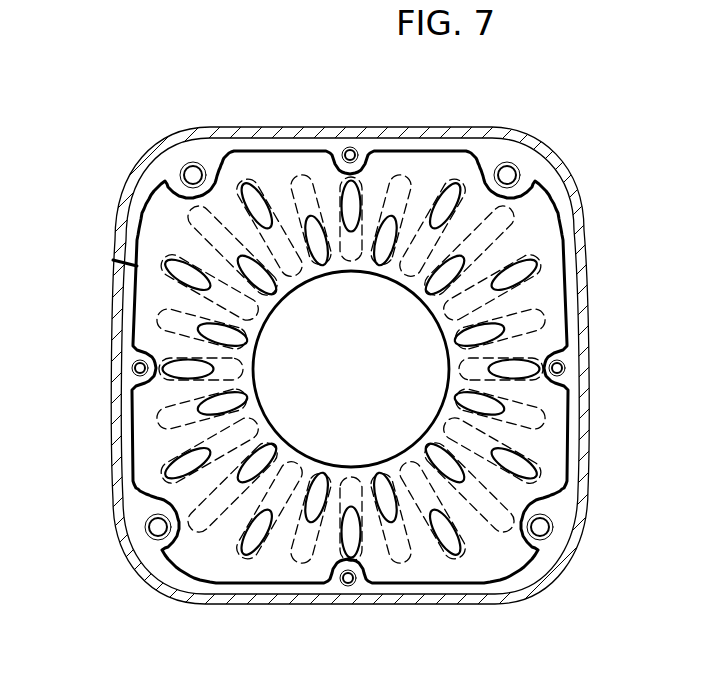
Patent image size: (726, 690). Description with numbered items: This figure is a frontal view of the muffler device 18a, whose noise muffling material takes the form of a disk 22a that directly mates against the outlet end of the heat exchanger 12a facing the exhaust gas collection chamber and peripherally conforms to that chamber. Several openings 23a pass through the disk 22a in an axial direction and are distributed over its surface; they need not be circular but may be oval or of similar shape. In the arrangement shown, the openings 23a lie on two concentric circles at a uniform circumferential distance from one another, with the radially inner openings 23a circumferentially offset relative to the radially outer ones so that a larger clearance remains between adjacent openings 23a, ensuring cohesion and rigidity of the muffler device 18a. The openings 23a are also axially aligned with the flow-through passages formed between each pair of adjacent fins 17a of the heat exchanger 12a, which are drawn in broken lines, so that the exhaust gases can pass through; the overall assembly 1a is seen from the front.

The housing cover assembly 1a is at (172, 124).
The heat exchanger 12a is at (572, 172).
The fins 17a is at (320, 287).
The muffler device 18a is at (114, 260).
The disk 22a is at (153, 437).
The openings 23a is at (255, 195).